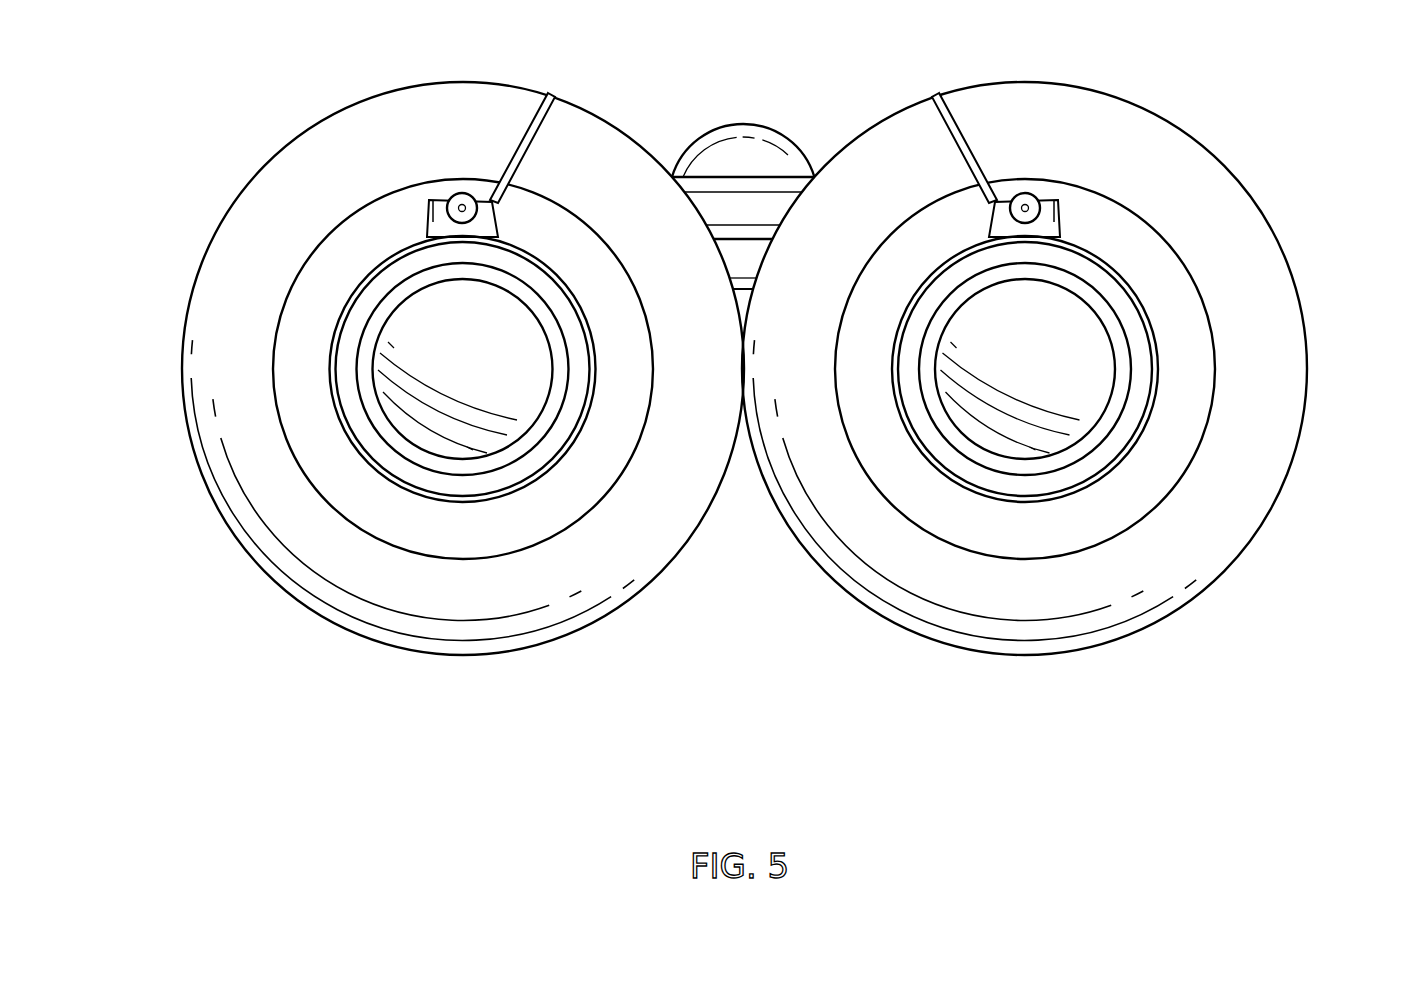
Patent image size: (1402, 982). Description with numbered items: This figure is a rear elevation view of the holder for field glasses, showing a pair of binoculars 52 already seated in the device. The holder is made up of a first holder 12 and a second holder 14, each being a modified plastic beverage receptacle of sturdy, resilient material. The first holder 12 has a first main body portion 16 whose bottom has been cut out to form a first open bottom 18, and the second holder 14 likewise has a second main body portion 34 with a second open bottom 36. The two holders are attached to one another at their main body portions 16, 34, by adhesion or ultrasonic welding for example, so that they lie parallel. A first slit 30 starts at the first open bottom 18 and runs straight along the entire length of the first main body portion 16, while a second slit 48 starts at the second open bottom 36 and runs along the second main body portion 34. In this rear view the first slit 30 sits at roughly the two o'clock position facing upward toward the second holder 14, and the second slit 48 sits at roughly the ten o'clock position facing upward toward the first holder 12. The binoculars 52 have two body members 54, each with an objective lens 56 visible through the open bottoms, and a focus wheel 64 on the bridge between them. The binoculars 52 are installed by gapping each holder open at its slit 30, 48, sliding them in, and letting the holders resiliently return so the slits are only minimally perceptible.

The first holder 12 is at (190, 180).
The second holder 14 is at (1312, 239).
The first main body portion 16 is at (230, 492).
The first open bottom 18 is at (370, 198).
The first slit 30 is at (528, 118).
The second main body portion 34 is at (1283, 415).
The second open bottom 36 is at (1187, 267).
The second slit 48 is at (960, 118).
The binoculars 52 is at (545, 480).
The body members 54 is at (400, 468).
The objective lens 56 is at (453, 430).
The focus wheel 64 is at (722, 152).